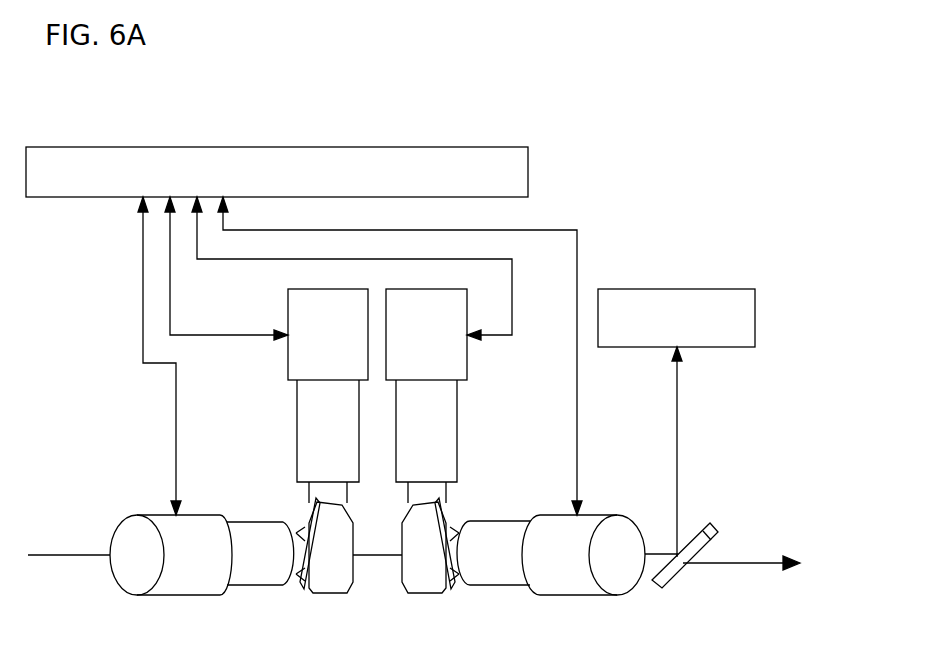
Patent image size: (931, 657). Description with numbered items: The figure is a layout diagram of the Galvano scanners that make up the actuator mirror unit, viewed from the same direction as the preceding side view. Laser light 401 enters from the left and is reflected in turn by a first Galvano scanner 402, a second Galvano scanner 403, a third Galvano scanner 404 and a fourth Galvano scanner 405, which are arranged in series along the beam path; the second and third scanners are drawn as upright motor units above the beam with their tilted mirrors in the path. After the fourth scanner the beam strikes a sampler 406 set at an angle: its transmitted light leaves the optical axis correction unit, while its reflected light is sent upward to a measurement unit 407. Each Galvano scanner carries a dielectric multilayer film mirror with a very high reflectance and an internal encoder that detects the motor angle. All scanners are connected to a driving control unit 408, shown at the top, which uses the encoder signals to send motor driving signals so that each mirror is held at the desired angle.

The laser light 401 is at (80, 554).
The first Galvano scanner 402 is at (148, 514).
The second Galvano scanner 403 is at (297, 431).
The third Galvano scanner 404 is at (457, 432).
The fourth Galvano scanner 405 is at (600, 514).
The sampler 406 is at (718, 527).
The measurement unit 407 is at (700, 289).
The driving control unit 408 is at (420, 147).